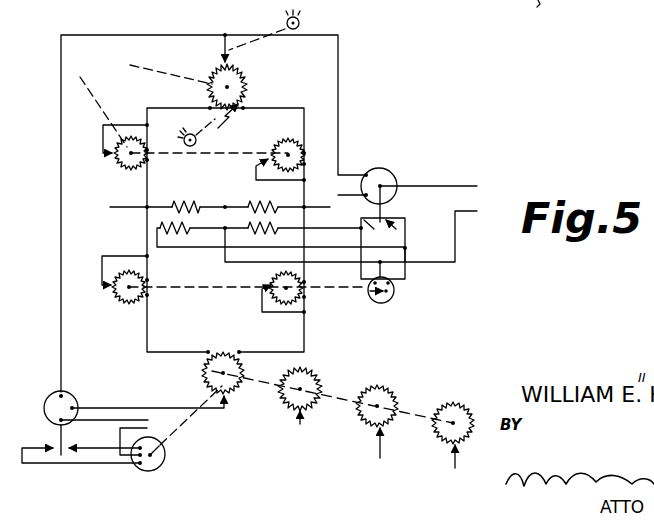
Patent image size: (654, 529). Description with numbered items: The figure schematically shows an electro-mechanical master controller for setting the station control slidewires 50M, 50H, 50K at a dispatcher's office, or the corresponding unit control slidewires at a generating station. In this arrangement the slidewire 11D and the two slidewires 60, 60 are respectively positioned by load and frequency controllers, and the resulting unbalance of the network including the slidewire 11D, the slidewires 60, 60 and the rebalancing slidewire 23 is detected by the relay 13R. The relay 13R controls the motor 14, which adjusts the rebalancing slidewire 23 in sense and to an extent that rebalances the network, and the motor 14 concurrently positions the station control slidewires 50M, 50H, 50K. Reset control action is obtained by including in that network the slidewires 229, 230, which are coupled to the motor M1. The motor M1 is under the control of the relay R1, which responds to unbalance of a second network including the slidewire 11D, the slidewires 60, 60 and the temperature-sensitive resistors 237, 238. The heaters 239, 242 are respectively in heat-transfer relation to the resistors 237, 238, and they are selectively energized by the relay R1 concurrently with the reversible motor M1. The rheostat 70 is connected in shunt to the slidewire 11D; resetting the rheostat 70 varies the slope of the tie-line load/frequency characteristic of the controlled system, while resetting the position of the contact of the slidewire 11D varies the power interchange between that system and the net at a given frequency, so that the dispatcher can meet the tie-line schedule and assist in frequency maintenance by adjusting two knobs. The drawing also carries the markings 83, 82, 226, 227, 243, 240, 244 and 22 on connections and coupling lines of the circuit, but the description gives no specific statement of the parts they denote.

The light beam 83 is at (149, 69).
The light beam 82 is at (105, 110).
The slidewire 11D is at (248, 81).
The rheostat 70 is at (240, 121).
The slidewire 60 is at (121, 168).
The conductor 226 is at (130, 210).
The temperature-sensitive resistor 237 is at (177, 203).
The temperature-sensitive resistor 238 is at (251, 203).
The conductor 227 is at (315, 207).
The relay R1 is at (388, 169).
The heater 239 is at (196, 235).
The heater 242 is at (266, 236).
The switch 243 is at (383, 248).
The switch 240 is at (423, 244).
The slidewire 229 is at (125, 305).
The slidewire 230 is at (279, 306).
The light beam 244 is at (339, 293).
The motor M1 is at (395, 296).
The relay 13R is at (68, 396).
The rebalancing slidewire 23 is at (202, 373).
The light beam 22 is at (180, 428).
The motor 14 is at (161, 466).
The station control slidewire 50M is at (285, 411).
The station control slidewire 50H is at (366, 428).
The station control slidewire 50K is at (444, 446).